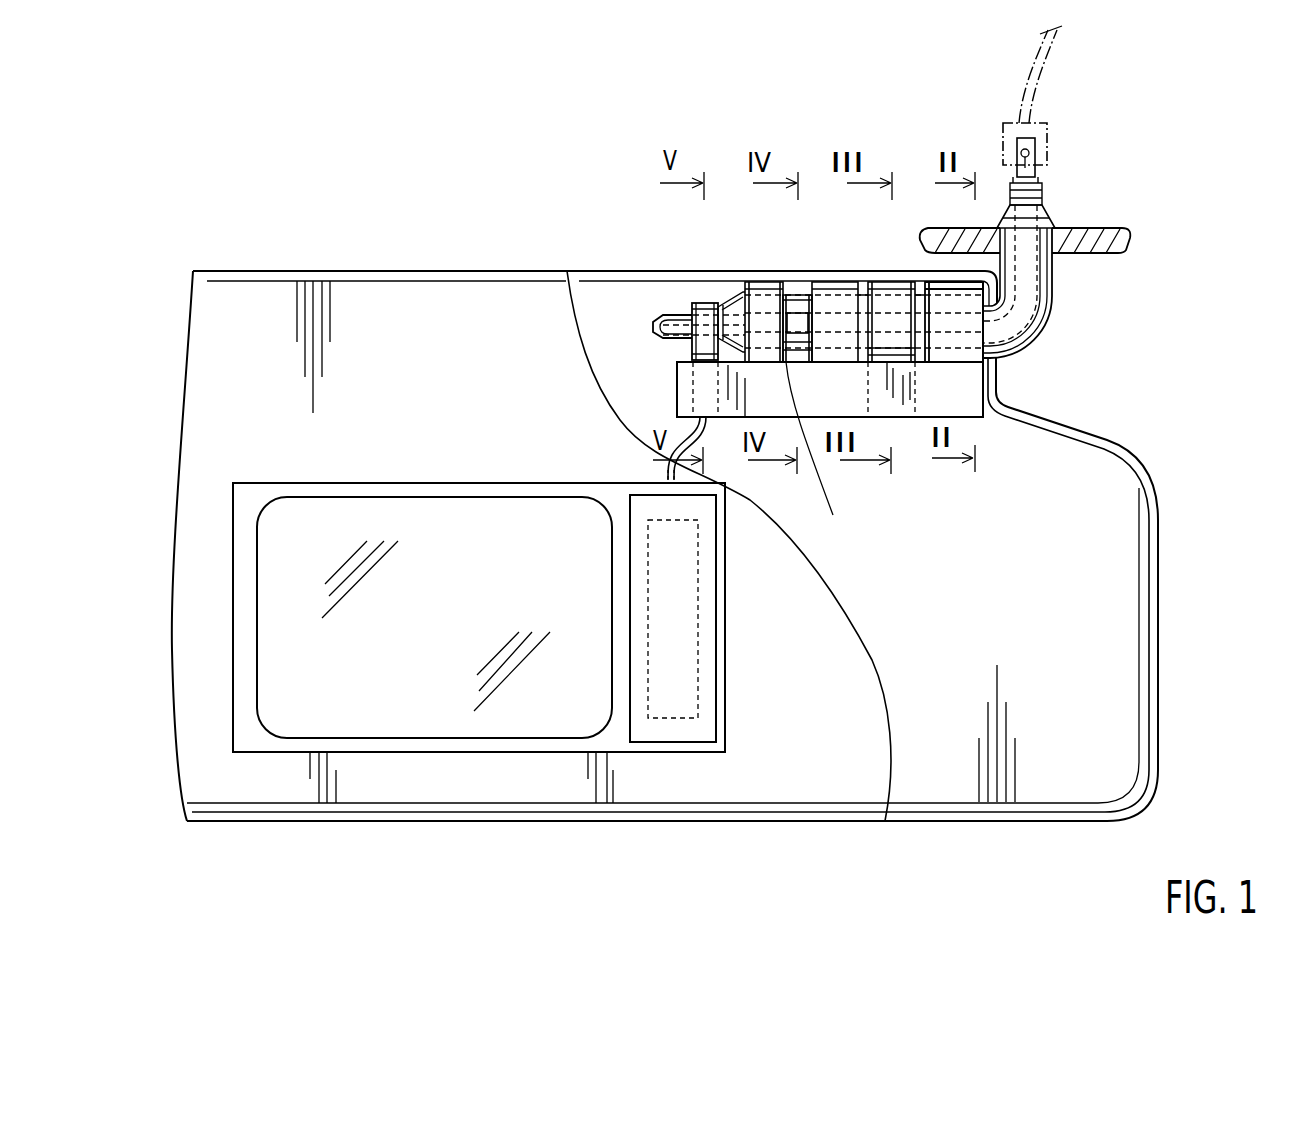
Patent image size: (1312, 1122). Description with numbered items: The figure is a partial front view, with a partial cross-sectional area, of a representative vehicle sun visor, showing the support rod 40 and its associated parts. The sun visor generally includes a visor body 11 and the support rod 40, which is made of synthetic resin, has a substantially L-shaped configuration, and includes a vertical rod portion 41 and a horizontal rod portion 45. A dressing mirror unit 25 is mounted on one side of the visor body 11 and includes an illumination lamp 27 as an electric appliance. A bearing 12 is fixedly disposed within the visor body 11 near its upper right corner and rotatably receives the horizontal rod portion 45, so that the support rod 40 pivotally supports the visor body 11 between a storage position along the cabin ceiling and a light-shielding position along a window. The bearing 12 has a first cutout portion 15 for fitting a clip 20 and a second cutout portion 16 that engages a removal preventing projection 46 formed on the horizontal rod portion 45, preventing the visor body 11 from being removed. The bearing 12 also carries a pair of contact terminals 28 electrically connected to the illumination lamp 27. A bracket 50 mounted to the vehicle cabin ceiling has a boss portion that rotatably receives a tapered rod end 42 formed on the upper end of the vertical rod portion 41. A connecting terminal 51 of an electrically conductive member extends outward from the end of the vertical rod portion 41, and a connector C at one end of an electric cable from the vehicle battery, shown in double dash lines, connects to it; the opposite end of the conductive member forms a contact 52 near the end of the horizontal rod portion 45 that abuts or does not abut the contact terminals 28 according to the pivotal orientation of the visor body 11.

The visor body 11 is at (437, 256).
The bearing 12 is at (998, 387).
The first cutout portion 15 is at (926, 300).
The second cutout portion 16 is at (808, 298).
The clip 20 is at (889, 286).
The dressing mirror unit 25 is at (466, 460).
The illumination lamp 27 is at (675, 608).
The contact terminals 28 is at (705, 303).
The support rod 40 is at (1066, 321).
The vertical rod portion 41 is at (1043, 265).
The tapered rod end 42 is at (1043, 233).
The horizontal rod portion 45 is at (761, 457).
The removal preventing projection 46 is at (796, 313).
The bracket 50 is at (1109, 230).
The connecting terminal 51 is at (1028, 146).
The contact 52 is at (677, 308).
The connector C is at (1007, 133).